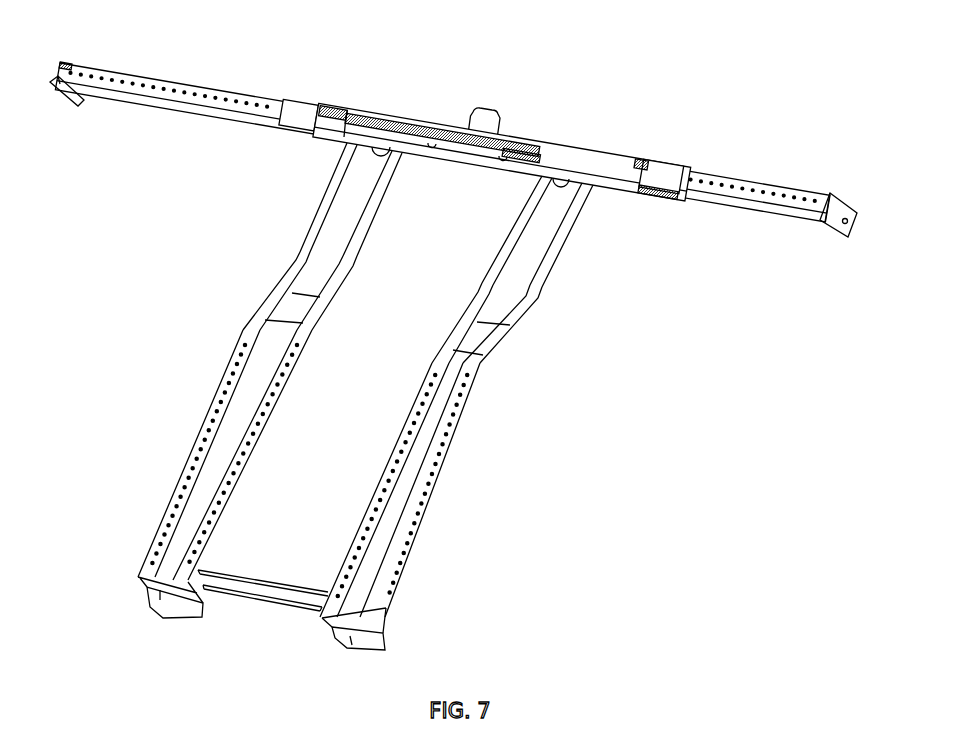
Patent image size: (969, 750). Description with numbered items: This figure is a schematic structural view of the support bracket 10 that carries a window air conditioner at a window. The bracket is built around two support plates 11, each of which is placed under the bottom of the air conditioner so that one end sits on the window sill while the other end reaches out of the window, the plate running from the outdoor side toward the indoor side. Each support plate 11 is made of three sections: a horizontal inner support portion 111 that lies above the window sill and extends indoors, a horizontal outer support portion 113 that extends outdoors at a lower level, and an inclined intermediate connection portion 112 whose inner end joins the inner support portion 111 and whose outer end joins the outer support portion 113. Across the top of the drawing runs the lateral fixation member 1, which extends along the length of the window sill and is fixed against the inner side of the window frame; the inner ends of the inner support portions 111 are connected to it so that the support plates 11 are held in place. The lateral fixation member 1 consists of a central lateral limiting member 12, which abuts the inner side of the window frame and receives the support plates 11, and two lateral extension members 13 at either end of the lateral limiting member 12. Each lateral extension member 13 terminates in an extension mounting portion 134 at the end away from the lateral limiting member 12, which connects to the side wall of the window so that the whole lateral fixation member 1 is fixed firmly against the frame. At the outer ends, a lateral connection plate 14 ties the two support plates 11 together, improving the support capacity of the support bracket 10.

The support bracket 10 is at (86, 310).
The lateral fixation member 1 is at (598, 157).
The support plate 11 is at (380, 396).
The inner support portion 111 is at (352, 212).
The intermediate connection portion 112 is at (300, 310).
The outer support portion 113 is at (203, 497).
The lateral limiting member 12 is at (403, 118).
The lateral extension member 13 is at (155, 90).
The extension mounting portion 134 is at (57, 96).
The lateral connection plate 14 is at (244, 583).